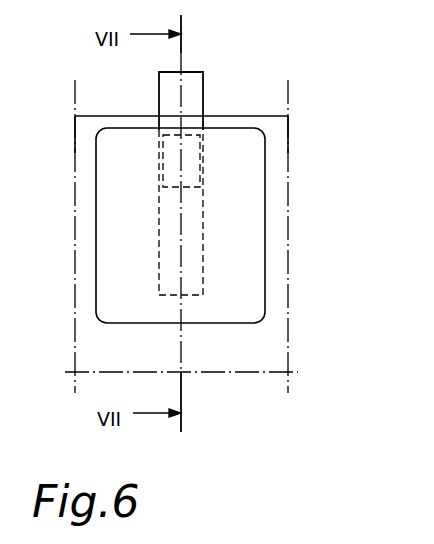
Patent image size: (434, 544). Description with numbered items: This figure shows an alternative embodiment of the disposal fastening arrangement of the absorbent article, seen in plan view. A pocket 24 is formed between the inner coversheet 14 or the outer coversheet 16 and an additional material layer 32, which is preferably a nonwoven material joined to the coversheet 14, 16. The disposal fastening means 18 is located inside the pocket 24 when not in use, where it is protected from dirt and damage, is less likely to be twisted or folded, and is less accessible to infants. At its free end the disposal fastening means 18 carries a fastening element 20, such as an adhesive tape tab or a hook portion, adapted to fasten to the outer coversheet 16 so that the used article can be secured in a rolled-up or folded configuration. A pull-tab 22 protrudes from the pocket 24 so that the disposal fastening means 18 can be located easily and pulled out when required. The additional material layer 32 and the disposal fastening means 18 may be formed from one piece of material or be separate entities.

The inner coversheet 14 is at (239, 236).
The outer coversheet 16 is at (253, 345).
The disposal fastening means 18 is at (167, 252).
The fastening element 20 is at (155, 148).
The pull-tab 22 is at (190, 95).
The pocket 24 is at (272, 184).
The additional material layer 32 is at (247, 258).